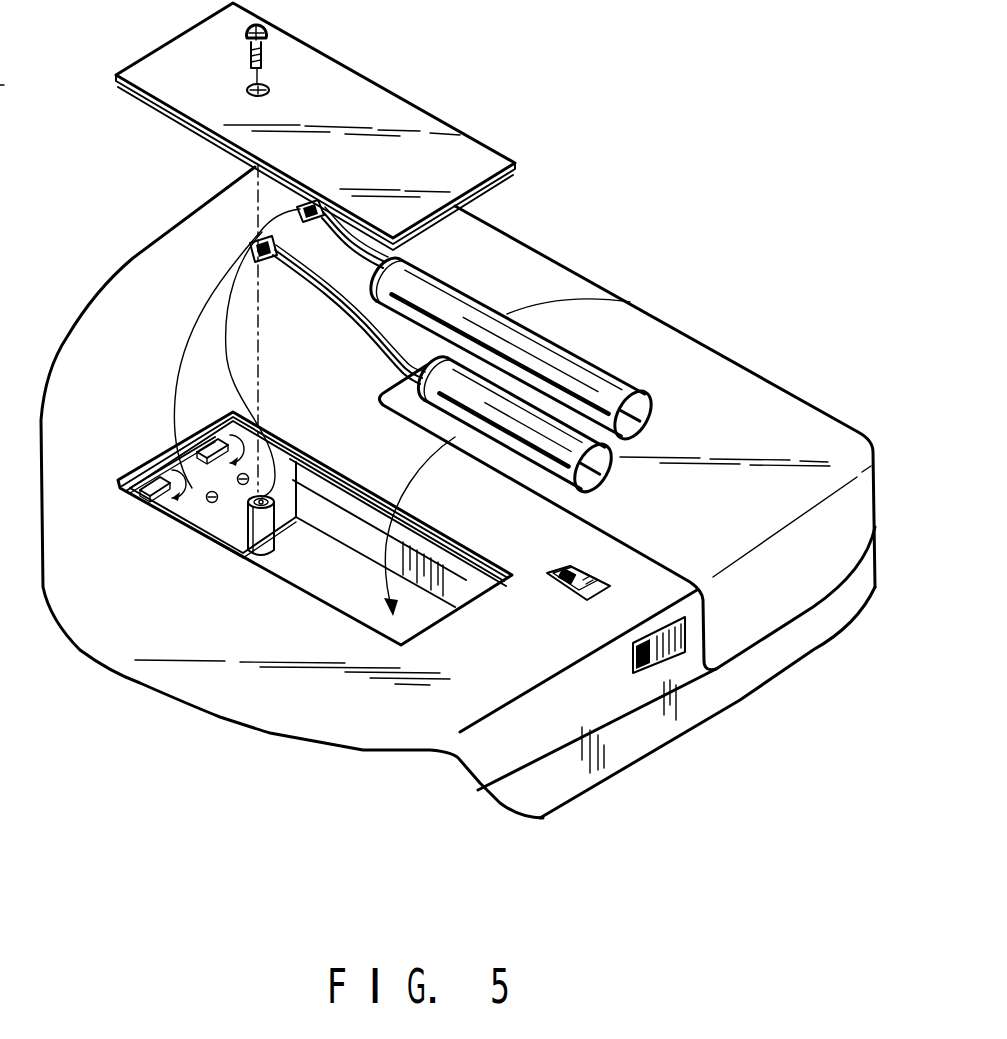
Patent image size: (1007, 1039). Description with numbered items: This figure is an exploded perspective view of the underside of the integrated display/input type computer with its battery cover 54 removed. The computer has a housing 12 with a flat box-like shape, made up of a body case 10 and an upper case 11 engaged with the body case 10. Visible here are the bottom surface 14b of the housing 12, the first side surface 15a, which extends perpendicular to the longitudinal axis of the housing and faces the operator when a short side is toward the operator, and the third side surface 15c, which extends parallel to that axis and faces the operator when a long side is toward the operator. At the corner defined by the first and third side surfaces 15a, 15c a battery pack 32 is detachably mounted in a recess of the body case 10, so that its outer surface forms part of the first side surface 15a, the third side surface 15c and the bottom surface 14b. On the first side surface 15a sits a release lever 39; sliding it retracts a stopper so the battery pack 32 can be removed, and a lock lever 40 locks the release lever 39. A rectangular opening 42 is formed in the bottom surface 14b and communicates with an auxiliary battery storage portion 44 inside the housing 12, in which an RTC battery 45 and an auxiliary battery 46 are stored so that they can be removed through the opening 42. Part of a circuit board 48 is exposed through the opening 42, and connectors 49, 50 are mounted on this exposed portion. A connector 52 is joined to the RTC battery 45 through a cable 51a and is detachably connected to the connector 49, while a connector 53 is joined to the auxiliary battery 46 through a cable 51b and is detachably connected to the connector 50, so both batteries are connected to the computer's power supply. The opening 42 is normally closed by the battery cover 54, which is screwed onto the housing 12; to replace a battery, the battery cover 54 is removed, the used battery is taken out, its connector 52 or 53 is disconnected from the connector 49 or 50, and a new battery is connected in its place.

The body case 10 is at (540, 737).
The upper case 11 is at (543, 800).
The housing 12 is at (633, 793).
The bottom surface 14b is at (230, 697).
The first side surface 15a is at (643, 733).
The third side surface 15c is at (545, 262).
The battery pack 32 is at (723, 380).
The release lever 39 is at (680, 660).
The lock lever 40 is at (560, 587).
The opening 42 is at (300, 572).
The auxiliary battery storage portion 44 is at (343, 593).
The RTC battery 45 is at (595, 373).
The auxiliary battery 46 is at (535, 405).
The circuit board 48 is at (190, 513).
The connector 49 is at (133, 495).
The connector 50 is at (213, 427).
The cable 51a is at (335, 300).
The cable 51b is at (385, 253).
The connector 52 is at (247, 240).
The connector 53 is at (250, 167).
The battery cover 54 is at (397, 103).